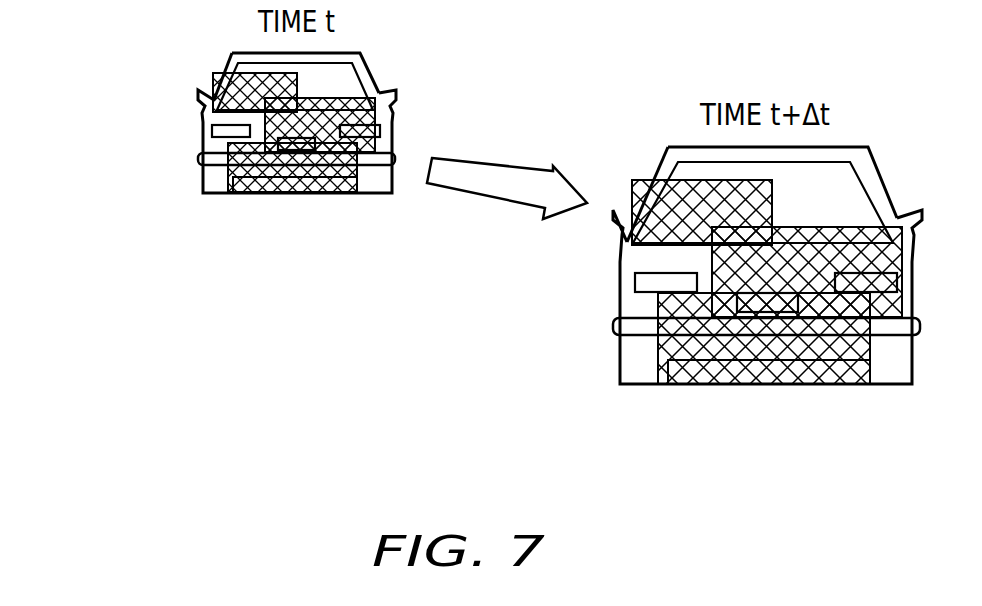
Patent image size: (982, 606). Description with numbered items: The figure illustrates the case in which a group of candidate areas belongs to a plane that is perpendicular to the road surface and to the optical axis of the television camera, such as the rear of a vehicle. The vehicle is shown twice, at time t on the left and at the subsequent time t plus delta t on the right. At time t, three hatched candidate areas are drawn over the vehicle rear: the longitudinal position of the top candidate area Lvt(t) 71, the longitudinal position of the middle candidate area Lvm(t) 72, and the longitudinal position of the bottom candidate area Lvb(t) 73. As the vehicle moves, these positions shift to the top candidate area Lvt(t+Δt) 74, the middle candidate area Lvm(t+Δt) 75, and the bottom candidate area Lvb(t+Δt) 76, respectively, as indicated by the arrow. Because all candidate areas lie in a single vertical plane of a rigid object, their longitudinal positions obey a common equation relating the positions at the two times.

The top candidate area longitudinal position Lvt(t) 71 is at (203, 110).
The middle candidate area longitudinal position Lvm(t) 72 is at (228, 153).
The bottom candidate area longitudinal position Lvb(t) 73 is at (203, 192).
The top candidate area longitudinal position Lvt(t+Δt) 74 is at (632, 245).
The middle candidate area longitudinal position Lvm(t+Δt) 75 is at (658, 317).
The bottom candidate area longitudinal position Lvb(t+Δt) 76 is at (620, 383).